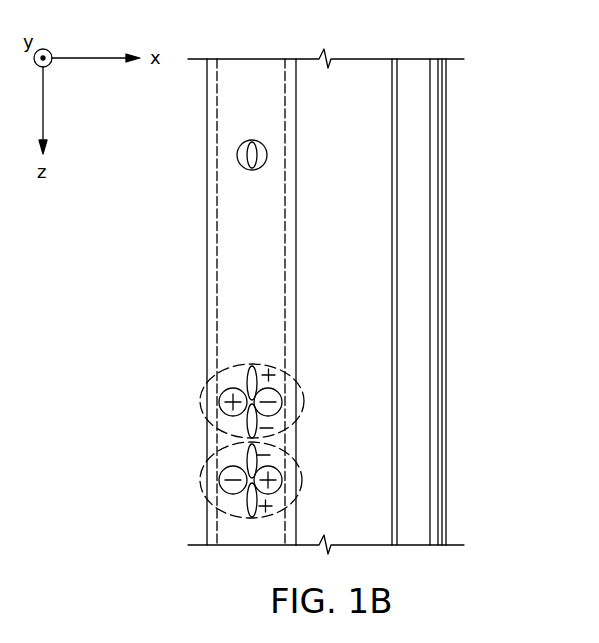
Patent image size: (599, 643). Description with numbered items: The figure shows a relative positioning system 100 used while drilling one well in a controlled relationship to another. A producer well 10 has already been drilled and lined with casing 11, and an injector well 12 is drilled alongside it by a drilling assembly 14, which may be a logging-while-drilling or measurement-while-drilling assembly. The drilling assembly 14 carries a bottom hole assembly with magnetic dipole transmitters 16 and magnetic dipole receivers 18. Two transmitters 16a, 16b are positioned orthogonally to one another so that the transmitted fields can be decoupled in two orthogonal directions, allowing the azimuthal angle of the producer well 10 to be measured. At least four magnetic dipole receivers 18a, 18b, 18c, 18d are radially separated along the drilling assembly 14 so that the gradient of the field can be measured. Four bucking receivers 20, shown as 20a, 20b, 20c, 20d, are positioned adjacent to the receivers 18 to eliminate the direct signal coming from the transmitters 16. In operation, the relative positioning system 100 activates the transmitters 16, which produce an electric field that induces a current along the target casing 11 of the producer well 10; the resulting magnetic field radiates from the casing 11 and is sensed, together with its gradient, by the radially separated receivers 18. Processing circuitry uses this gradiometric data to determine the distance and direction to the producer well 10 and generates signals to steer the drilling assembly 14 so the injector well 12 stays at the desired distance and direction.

The producer well 10 is at (426, 59).
The casing 11 is at (392, 75).
The injector well 12 is at (207, 127).
The drilling assembly 14 is at (285, 193).
The magnetic dipole transmitter 16 is at (261, 196).
The magnetic dipole transmitter 16a is at (263, 144).
The magnetic dipole transmitter 16b is at (252, 155).
The magnetic dipole receiver 18 is at (163, 468).
The magnetic dipole receiver 18a is at (258, 447).
The magnetic dipole receiver 18b is at (248, 513).
The magnetic dipole receiver 18c is at (279, 470).
The magnetic dipole receiver 18d is at (222, 487).
The bucking receiver 20 is at (170, 360).
The first dipole negative charge 20a is at (280, 392).
The first dipole first lobe 20b is at (255, 368).
The first dipole second lobe 20c is at (248, 423).
The first dipole positive charge 20d is at (222, 393).
The relative positioning system 100 is at (178, 186).